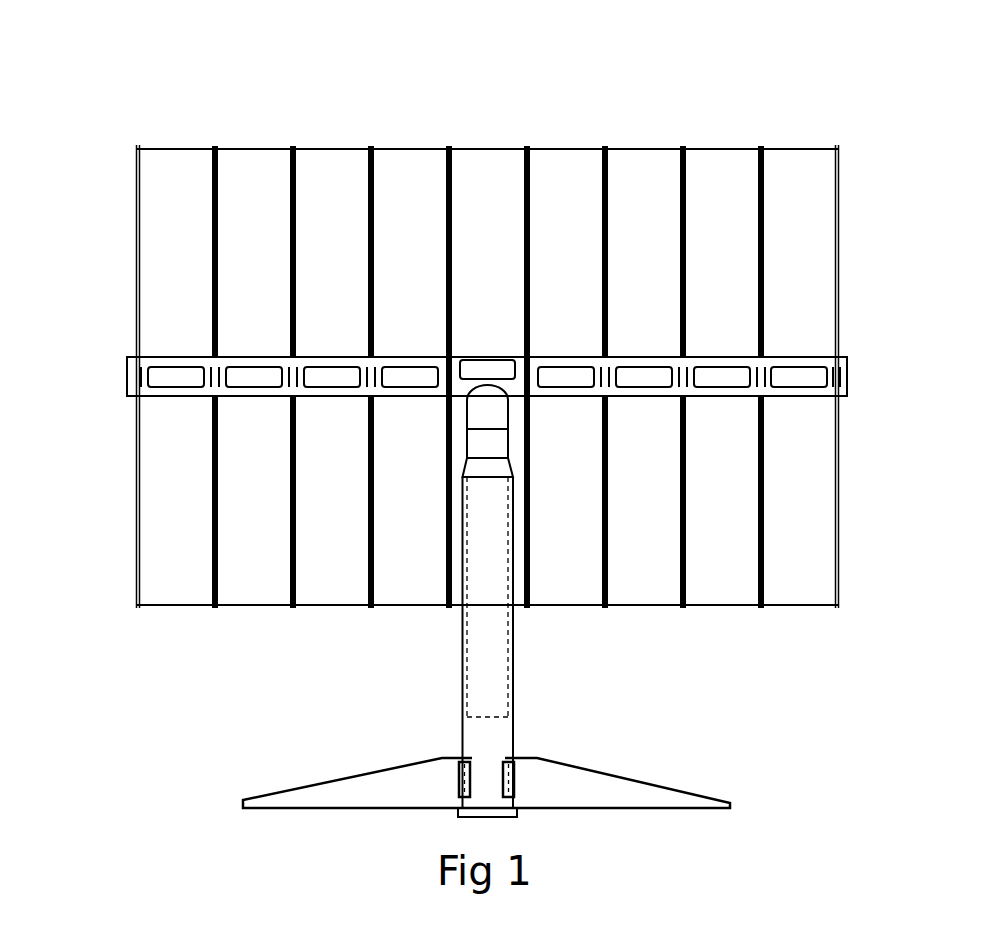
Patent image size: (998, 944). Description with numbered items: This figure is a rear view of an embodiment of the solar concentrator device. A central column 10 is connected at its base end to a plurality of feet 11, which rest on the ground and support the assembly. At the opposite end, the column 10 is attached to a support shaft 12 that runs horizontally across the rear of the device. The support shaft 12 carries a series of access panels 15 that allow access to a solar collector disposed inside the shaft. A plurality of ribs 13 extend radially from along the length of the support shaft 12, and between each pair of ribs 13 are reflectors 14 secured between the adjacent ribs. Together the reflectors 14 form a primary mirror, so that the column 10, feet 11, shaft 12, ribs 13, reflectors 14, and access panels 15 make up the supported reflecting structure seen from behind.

The central column 10 is at (487, 655).
The feet 11 is at (408, 795).
The support shaft 12 is at (848, 373).
The ribs 13 is at (682, 147).
The reflectors 14 is at (340, 165).
The access panels 15 is at (258, 375).